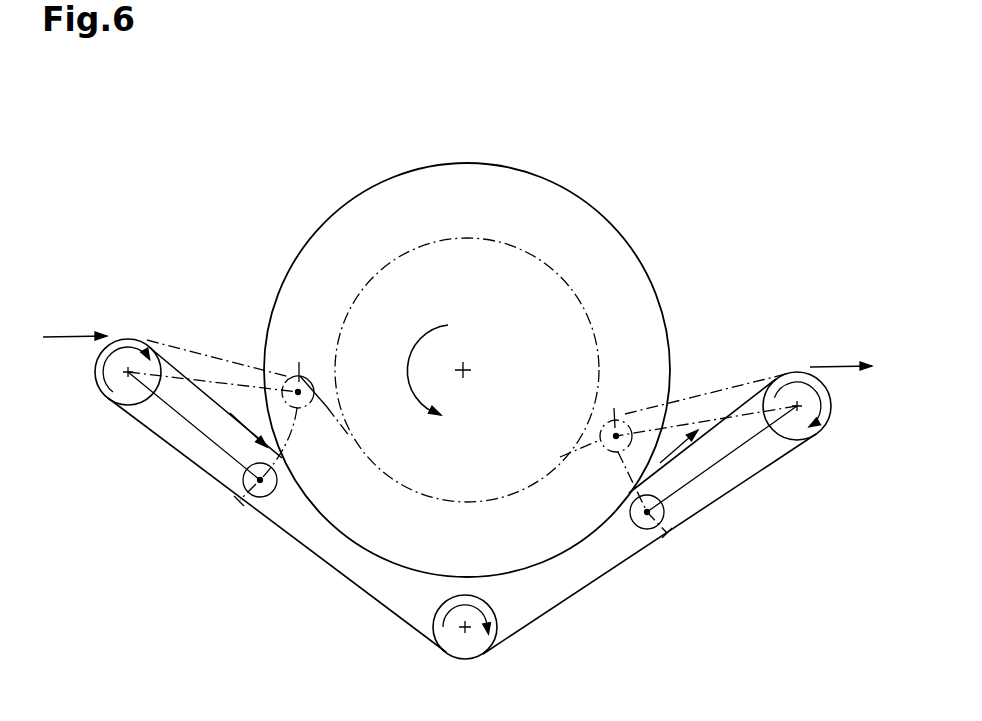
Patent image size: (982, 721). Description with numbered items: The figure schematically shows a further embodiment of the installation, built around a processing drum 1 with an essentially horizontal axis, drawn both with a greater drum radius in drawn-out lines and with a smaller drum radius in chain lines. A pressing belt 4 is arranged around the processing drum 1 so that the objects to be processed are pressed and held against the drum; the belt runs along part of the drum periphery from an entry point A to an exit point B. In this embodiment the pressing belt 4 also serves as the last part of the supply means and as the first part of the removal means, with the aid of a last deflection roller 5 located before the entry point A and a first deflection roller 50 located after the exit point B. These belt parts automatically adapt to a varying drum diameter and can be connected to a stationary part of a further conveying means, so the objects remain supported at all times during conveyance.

The processing drum 1 is at (538, 155).
The pressing belt 4 is at (168, 358).
The deflection roller 5 is at (124, 340).
The deflection roller 50 is at (806, 372).
The entry point A is at (249, 375).
The exit point B is at (680, 395).